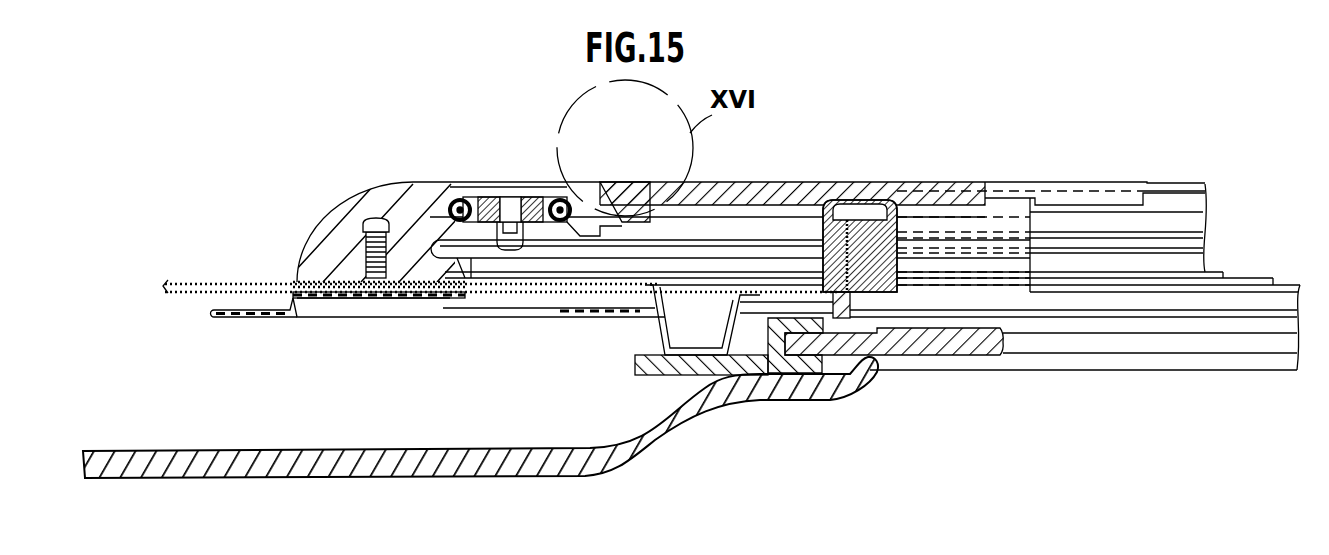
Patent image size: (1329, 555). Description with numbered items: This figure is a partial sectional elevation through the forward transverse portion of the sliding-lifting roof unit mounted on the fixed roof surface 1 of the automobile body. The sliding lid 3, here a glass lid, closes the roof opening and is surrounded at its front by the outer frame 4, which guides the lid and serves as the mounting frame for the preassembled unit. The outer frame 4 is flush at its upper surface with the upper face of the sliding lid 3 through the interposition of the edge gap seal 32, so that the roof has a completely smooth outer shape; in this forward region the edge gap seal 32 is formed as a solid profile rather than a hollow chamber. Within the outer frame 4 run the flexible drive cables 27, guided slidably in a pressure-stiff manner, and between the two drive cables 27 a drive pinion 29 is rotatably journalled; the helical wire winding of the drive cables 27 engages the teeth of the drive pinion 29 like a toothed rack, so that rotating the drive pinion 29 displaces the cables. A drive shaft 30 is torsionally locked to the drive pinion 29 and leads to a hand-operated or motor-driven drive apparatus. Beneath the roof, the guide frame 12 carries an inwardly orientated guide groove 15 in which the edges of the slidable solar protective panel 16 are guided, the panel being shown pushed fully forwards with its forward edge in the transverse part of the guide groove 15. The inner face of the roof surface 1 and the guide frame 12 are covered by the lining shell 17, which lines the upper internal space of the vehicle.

The fixed roof surface 1 is at (213, 282).
The sliding lid 3 is at (868, 182).
The outer frame 4 is at (342, 206).
The guide frame 12 is at (633, 364).
The guide groove 15 is at (781, 338).
The solar protective panel 16 is at (958, 350).
The lining shell 17 is at (652, 438).
The drive cables 27 is at (458, 199).
The drive pinion 29 is at (492, 196).
The drive shaft 30 is at (513, 235).
The edge gap seal 32 is at (626, 176).